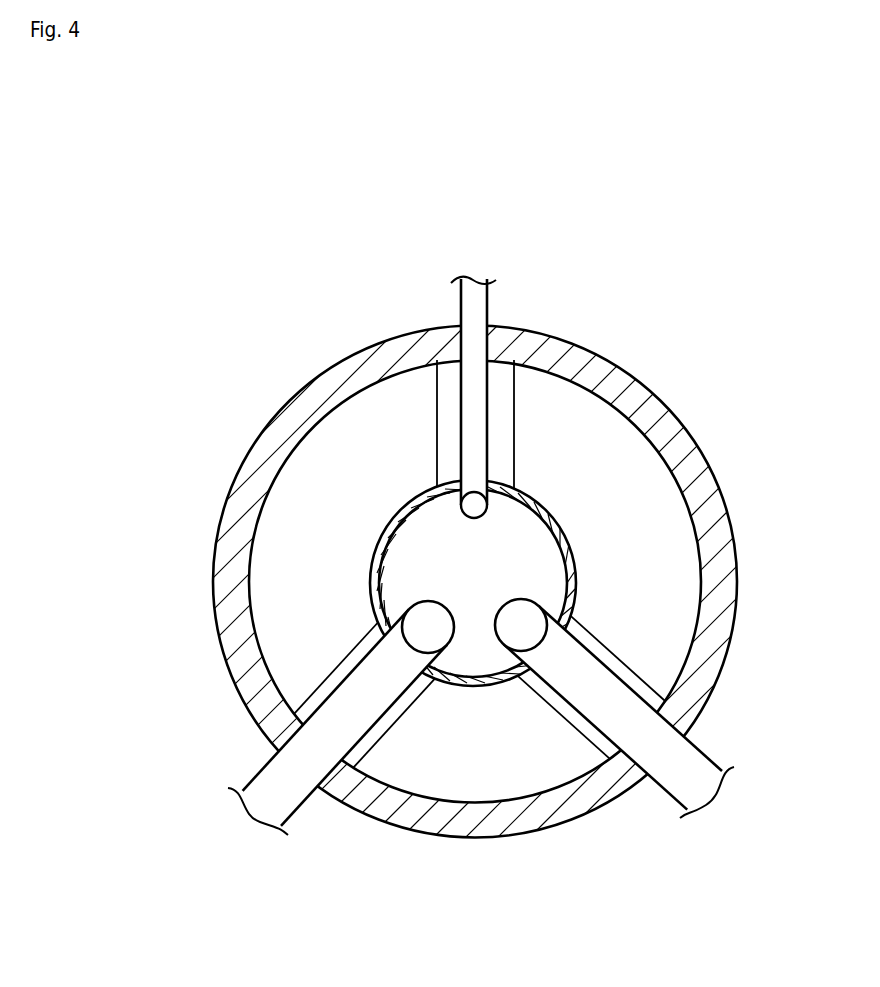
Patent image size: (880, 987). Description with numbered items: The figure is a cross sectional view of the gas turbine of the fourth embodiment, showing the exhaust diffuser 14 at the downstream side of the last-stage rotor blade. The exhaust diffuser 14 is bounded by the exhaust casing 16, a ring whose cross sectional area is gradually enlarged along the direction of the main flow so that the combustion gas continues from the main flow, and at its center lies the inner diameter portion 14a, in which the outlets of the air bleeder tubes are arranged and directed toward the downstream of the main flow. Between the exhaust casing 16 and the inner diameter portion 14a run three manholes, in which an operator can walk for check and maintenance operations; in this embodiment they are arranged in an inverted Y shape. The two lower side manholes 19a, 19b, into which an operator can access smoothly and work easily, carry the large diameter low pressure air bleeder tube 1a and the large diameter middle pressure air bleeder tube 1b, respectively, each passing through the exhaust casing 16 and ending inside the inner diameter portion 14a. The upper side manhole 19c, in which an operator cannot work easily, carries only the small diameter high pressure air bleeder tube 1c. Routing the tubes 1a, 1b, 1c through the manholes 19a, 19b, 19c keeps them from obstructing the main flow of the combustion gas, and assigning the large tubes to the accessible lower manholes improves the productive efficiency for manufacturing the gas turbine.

The exhaust diffuser 14 is at (440, 562).
The inner diameter portion 14a is at (562, 529).
The exhaust casing 16 is at (672, 411).
The lower side manhole 19a is at (619, 656).
The lower side manhole 19b is at (343, 659).
The upper side manhole 19c is at (515, 417).
The large diameter low pressure air bleeder tube 1a is at (703, 756).
The large diameter middle pressure air bleeder tube 1b is at (249, 778).
The small diameter high pressure air bleeder tube 1c is at (487, 300).